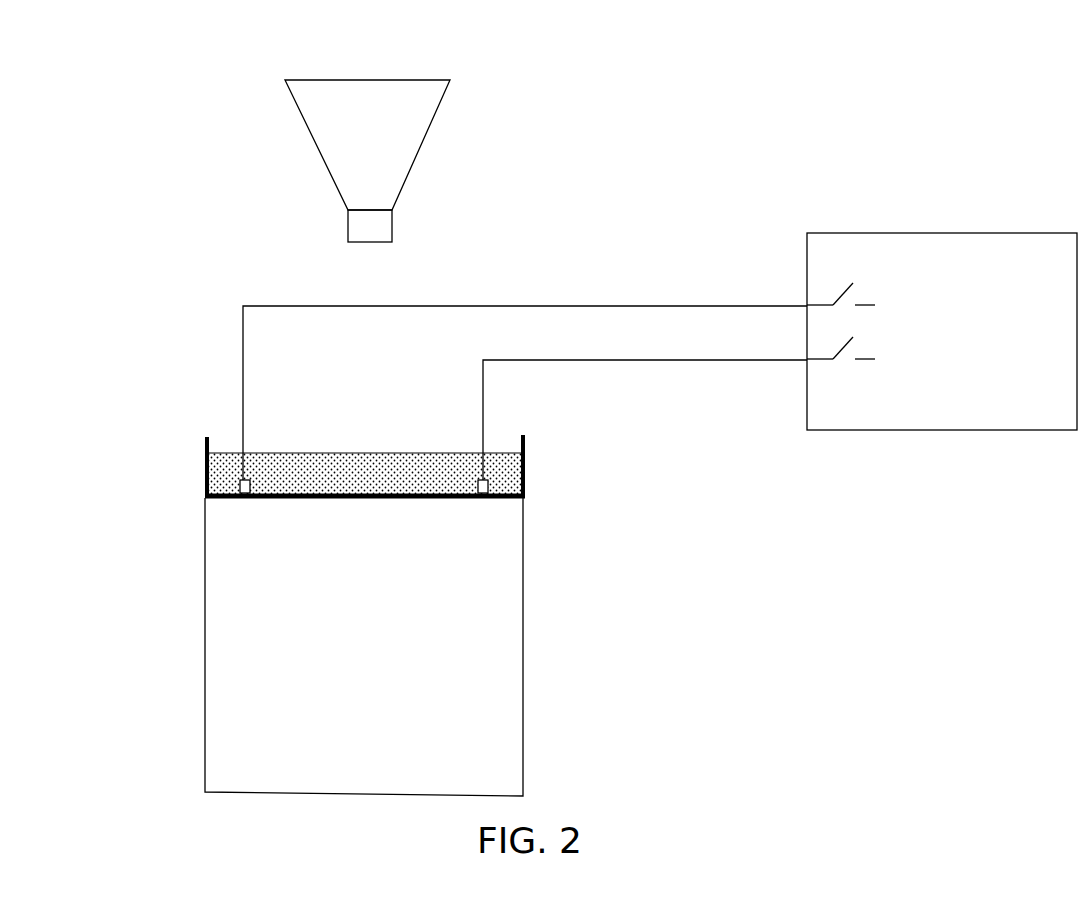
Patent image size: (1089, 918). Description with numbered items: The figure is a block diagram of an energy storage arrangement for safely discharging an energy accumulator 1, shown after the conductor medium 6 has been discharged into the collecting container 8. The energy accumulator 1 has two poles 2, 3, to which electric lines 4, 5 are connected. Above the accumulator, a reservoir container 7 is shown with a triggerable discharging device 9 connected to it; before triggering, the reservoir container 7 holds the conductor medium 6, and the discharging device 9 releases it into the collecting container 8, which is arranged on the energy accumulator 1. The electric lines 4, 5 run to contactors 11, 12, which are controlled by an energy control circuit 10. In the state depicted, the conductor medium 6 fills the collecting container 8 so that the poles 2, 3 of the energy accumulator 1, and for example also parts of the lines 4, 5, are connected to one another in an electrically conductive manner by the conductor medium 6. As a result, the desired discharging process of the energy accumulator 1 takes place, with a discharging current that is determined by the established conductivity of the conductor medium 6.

The energy accumulator 1 is at (492, 642).
The pole 2 is at (241, 481).
The pole 3 is at (488, 481).
The electric line 4 is at (525, 374).
The electric line 5 is at (645, 420).
The conductor medium 6 is at (340, 472).
The reservoir container 7 is at (296, 100).
The collecting container 8 is at (207, 458).
The triggerable discharging device 9 is at (352, 220).
The energy control circuit 10 is at (972, 258).
The contactor 11 is at (841, 272).
The contactor 12 is at (841, 370).